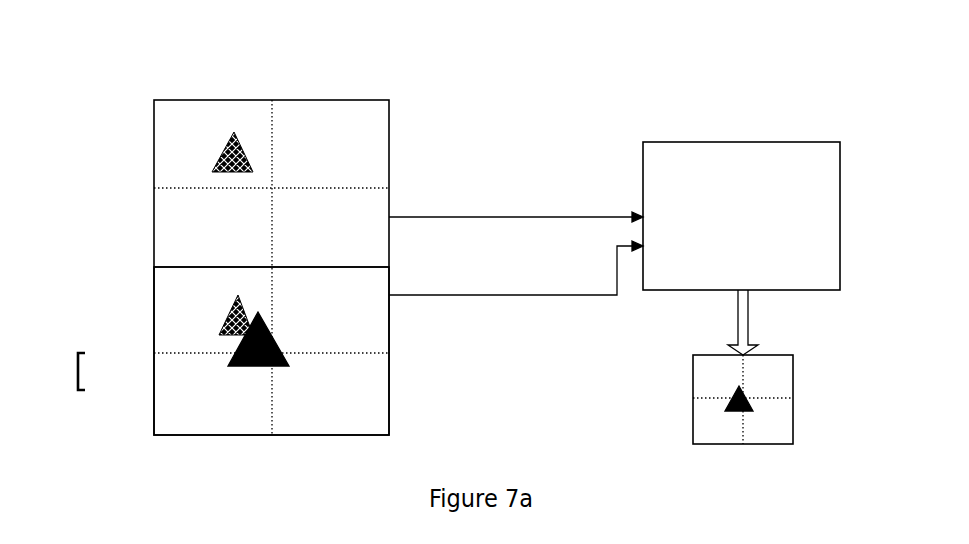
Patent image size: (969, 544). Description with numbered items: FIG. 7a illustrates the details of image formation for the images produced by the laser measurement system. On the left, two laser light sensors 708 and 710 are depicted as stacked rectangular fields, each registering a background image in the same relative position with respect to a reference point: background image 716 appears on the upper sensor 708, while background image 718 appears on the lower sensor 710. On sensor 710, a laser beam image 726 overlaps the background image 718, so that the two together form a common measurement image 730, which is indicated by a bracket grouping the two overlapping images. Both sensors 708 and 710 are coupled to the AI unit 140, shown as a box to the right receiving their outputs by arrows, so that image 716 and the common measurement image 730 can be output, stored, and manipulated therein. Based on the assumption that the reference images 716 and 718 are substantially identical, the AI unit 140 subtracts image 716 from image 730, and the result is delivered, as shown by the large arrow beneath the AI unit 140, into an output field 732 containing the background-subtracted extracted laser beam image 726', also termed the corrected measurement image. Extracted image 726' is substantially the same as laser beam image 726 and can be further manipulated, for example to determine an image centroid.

The laser light sensor 708 is at (389, 136).
The laser light sensor 710 is at (389, 368).
The background image 716 is at (224, 148).
The background image 718 is at (220, 333).
The laser beam image 726 is at (195, 359).
The common measurement image 730 is at (61, 371).
The AI unit 140 is at (738, 142).
The output image 732 is at (793, 395).
The extracted laser beam image 726' is at (690, 391).